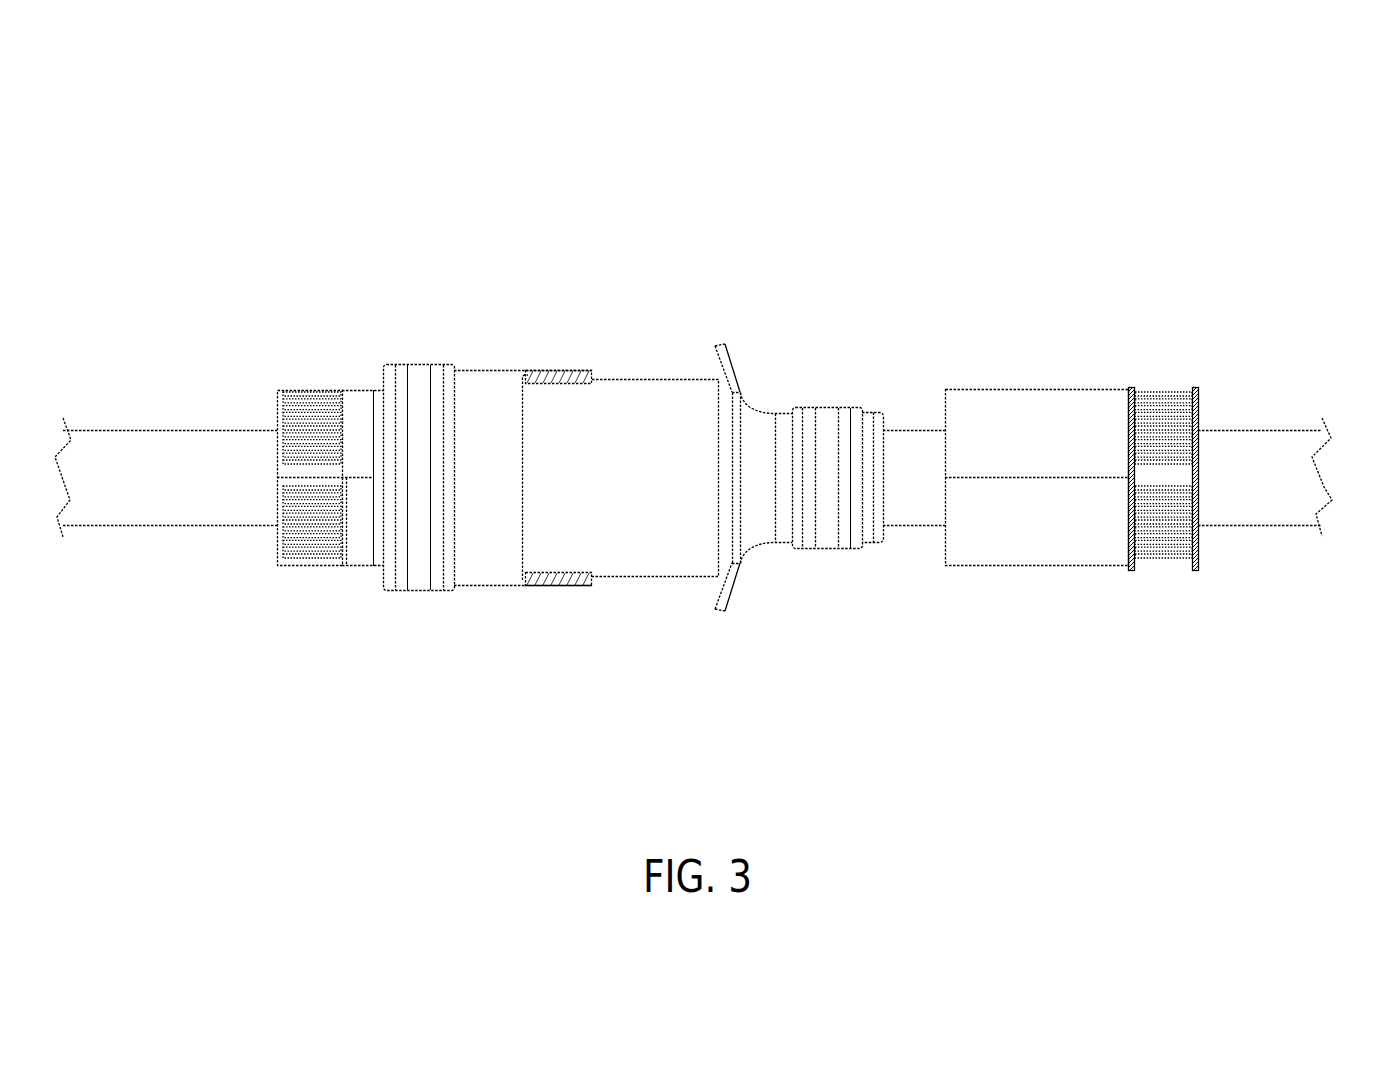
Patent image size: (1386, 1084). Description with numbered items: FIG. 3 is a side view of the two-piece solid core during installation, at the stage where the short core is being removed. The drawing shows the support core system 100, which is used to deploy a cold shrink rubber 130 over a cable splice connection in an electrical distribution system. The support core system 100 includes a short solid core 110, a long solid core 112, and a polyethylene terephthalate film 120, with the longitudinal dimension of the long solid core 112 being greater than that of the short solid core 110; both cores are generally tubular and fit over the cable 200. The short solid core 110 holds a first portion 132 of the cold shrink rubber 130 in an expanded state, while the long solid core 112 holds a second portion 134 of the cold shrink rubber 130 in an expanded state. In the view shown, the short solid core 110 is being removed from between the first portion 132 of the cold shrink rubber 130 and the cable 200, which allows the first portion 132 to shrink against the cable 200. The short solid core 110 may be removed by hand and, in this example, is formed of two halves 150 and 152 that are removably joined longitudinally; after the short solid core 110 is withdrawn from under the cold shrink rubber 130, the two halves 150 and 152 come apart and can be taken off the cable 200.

The support core system 100 is at (255, 186).
The short solid core 110 is at (995, 382).
The long solid core 112 is at (329, 384).
The polyethylene terephthalate (PET) film 120 is at (889, 543).
The cold shrink rubber 130 is at (617, 366).
The first portion of the cold shrink rubber 132 is at (877, 407).
The second portion of the cold shrink rubber 134 is at (419, 356).
The first half of the short solid core 150 is at (1073, 573).
The second half of the short solid core 152 is at (1073, 383).
The cable 200 is at (1252, 422).